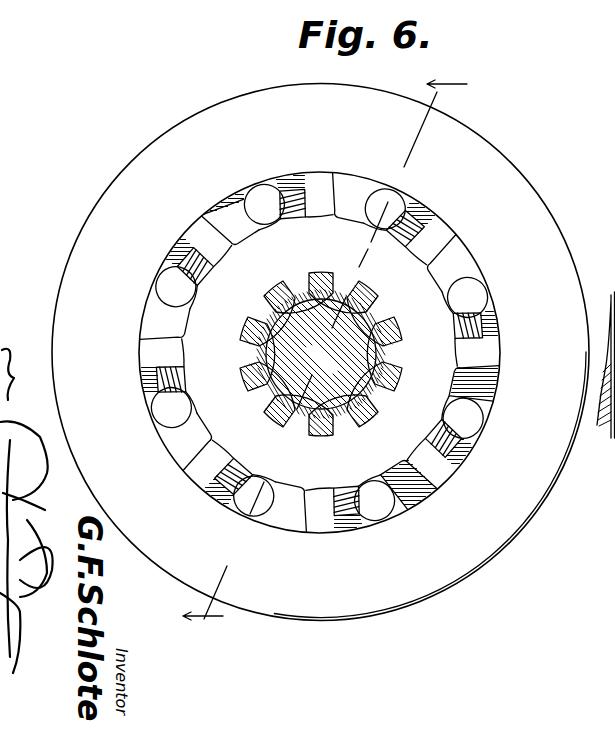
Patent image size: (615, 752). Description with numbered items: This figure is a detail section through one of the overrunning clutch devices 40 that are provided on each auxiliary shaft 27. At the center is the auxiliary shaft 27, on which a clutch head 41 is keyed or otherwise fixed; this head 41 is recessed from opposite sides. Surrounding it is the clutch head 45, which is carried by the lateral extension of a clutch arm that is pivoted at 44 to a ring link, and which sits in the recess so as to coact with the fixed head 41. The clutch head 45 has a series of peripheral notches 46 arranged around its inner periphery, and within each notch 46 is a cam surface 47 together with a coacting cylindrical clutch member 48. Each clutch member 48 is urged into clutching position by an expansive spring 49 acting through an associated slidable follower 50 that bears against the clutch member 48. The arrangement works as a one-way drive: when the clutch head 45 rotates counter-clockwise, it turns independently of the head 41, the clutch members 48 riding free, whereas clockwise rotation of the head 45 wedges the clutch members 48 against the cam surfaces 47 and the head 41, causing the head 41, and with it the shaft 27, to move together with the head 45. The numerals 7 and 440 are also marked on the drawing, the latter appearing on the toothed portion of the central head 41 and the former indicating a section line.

The section line 7- 7 is at (332, 355).
The auxiliary shaft 27 is at (266, 357).
The overrunning clutch device 40 is at (509, 558).
The clutch head 41 is at (221, 105).
The pivot 44 is at (613, 256).
The gear teeth of hub 440 is at (393, 327).
The clutch head 45 is at (472, 398).
The peripheral notch 46 is at (348, 188).
The cam surface 47 is at (236, 426).
The cylindrical clutch member 48 is at (266, 191).
The expansive spring 49 is at (314, 186).
The slidable follower 50 is at (180, 240).